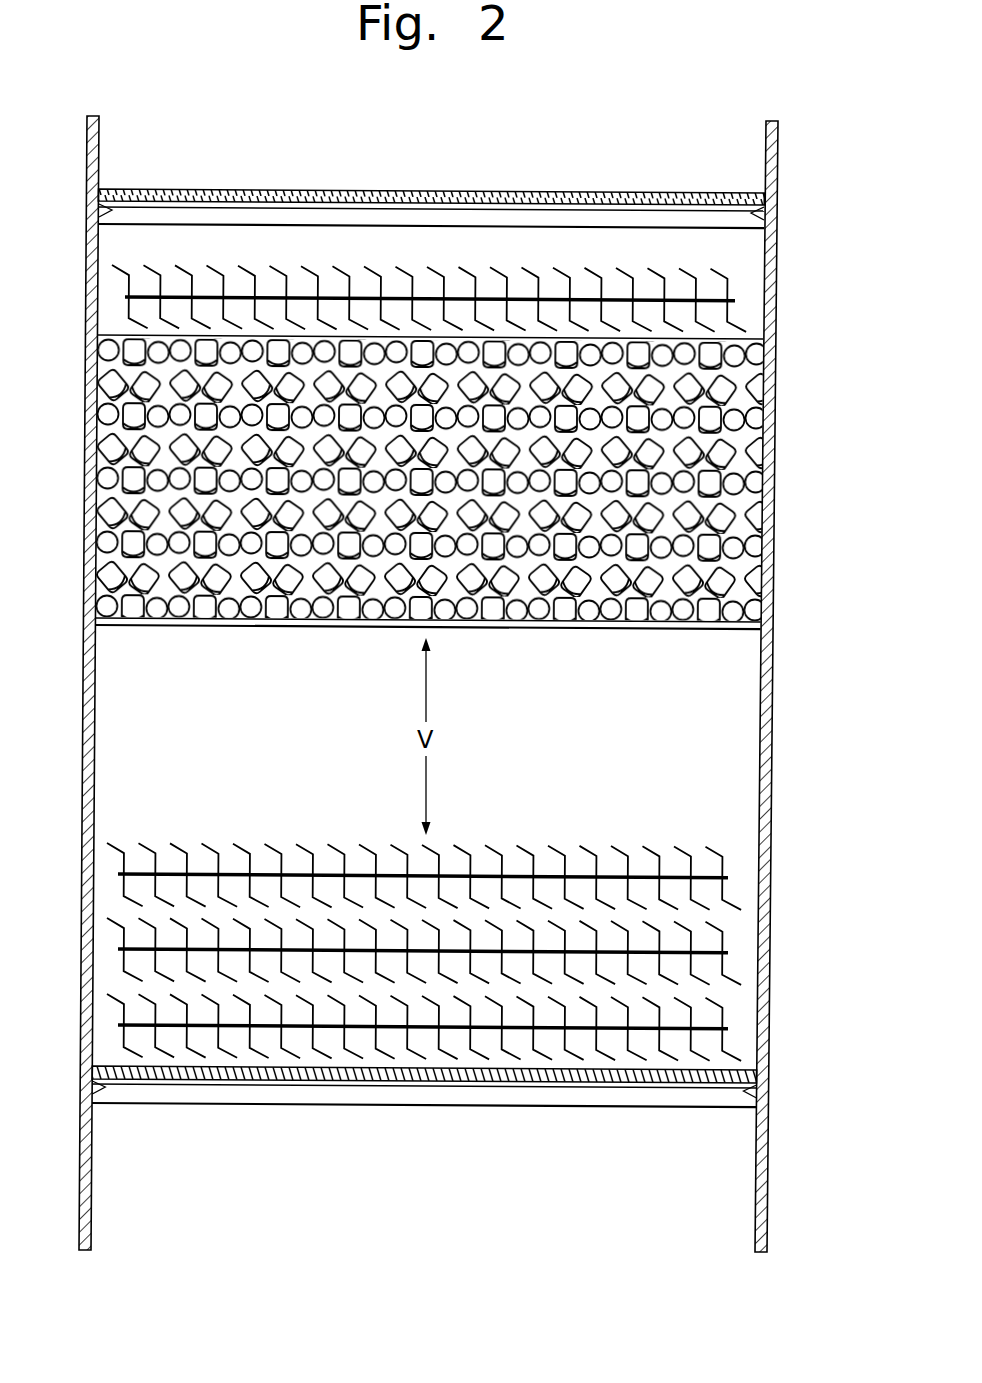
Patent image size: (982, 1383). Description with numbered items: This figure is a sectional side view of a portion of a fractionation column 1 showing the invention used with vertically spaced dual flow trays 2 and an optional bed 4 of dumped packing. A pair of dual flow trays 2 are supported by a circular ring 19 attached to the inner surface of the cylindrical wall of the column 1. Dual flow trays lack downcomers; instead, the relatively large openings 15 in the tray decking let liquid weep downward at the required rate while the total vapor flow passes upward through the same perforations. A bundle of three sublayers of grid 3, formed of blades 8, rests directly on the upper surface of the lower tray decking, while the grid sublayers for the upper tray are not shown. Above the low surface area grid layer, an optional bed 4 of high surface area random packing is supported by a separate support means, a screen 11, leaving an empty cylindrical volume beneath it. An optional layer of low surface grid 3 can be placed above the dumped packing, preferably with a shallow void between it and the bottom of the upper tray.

The column 1 is at (790, 416).
The dual flow tray 2 is at (356, 182).
The grid 3 is at (745, 283).
The bed of dumped packing 4 is at (700, 483).
The blades 8 is at (657, 847).
The screen 11 is at (637, 628).
The openings 15 is at (530, 190).
The circular ring 19 is at (113, 212).